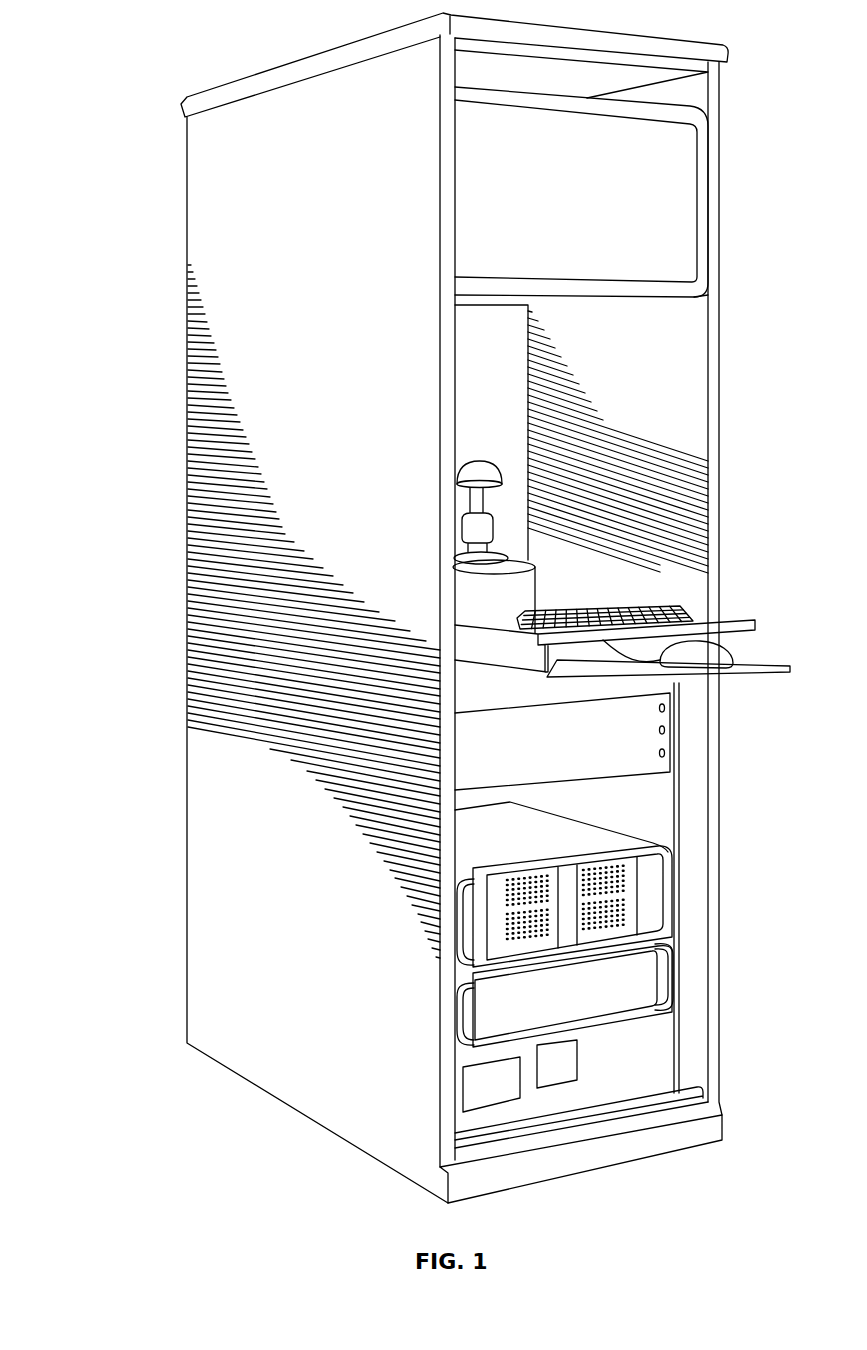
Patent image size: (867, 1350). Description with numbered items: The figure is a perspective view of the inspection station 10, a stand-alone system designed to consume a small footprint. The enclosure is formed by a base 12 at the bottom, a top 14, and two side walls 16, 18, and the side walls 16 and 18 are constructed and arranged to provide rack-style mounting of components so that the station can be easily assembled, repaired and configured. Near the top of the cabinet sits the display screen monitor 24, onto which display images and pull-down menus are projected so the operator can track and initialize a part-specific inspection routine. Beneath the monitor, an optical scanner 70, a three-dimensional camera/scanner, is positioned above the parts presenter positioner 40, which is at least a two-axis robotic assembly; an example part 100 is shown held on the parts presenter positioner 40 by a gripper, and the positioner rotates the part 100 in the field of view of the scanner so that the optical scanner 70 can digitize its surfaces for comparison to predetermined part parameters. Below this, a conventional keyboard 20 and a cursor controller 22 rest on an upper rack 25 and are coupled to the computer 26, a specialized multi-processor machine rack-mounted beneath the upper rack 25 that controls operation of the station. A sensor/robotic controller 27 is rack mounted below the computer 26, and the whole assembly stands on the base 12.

The inspection station 10 is at (183, 614).
The base 12 is at (715, 1113).
The top 14 is at (680, 35).
The side wall 16 is at (216, 277).
The side wall 18 is at (708, 422).
The keyboard 20 is at (690, 622).
The cursor controller 22 is at (733, 658).
The display screen monitor 24 is at (690, 207).
The upper rack 25 is at (665, 722).
The computer 26 is at (655, 905).
The sensor/robotic controller 27 is at (650, 973).
The parts presenter positioner 40 is at (535, 573).
The optical scanner 70 is at (503, 295).
The part 100 is at (505, 478).